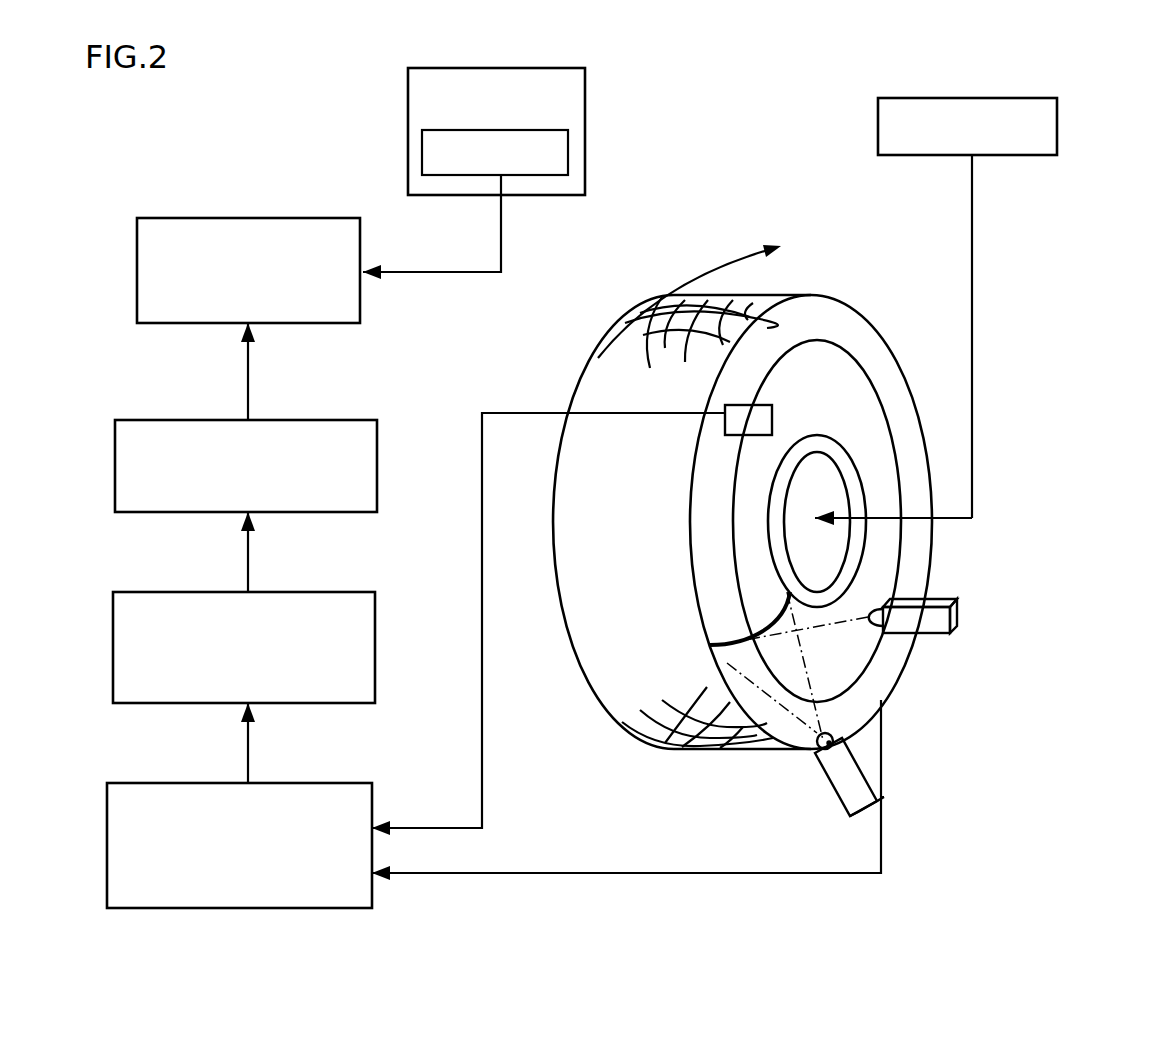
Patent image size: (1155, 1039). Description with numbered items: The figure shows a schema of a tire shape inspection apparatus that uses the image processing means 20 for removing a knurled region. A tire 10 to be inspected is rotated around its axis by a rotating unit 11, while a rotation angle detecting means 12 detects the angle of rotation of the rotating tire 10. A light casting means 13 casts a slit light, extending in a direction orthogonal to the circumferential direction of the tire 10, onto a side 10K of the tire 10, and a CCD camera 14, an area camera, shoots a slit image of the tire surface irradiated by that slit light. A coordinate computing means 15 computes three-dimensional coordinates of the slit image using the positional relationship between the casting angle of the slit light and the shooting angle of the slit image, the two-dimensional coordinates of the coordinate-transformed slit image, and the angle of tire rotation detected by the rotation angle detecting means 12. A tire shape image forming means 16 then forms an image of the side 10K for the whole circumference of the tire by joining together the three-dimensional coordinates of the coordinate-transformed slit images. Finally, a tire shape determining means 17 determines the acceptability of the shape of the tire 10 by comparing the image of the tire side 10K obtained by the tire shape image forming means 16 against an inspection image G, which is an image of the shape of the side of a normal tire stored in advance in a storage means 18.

The tire 10 is at (815, 307).
The side of the tire 10K is at (683, 685).
The rotating unit 11 is at (1015, 98).
The rotation angle detecting means 12 is at (757, 405).
The light casting means 13 is at (950, 617).
The CCD camera 14 is at (863, 763).
The coordinate computing means 15 is at (300, 783).
The tire shape image forming means 16 is at (280, 592).
The tire shape determining means 17 is at (222, 218).
The storage means 18 is at (545, 68).
The image processing means 20 is at (285, 420).
The inspection image G is at (563, 150).